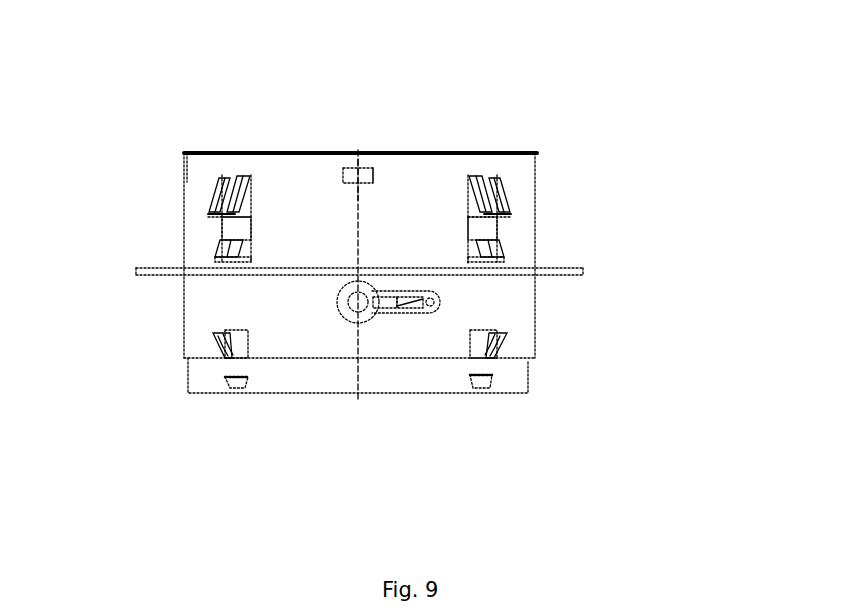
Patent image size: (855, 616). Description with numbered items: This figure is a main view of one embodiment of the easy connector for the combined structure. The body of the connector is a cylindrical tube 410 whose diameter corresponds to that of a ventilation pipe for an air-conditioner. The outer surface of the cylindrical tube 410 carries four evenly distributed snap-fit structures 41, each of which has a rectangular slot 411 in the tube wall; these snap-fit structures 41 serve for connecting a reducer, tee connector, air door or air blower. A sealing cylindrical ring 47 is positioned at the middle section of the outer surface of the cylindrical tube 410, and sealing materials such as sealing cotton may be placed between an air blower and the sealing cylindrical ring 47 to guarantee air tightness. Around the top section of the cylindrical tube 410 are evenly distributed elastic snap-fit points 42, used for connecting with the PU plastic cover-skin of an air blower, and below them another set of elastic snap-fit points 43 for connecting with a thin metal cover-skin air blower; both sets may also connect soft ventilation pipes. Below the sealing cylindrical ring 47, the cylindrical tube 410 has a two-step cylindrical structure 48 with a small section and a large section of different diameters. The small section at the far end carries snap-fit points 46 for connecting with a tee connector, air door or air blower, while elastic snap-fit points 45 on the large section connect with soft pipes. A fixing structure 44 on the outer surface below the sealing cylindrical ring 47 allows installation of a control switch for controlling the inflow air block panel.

The snap-fit structure 41 is at (465, 105).
The cylindrical tube 410 is at (352, 91).
The rectangular slot 411 is at (545, 116).
The elastic snap-fit points 42 is at (600, 159).
The elastic snap-fit points 43 is at (600, 209).
The fixing structure 44 is at (535, 269).
The elastic snap-fit points 45 is at (601, 312).
The snap-fit point 46 is at (601, 353).
The sealing cylindrical ring 47 is at (314, 153).
The two-step cylindrical structure 48 is at (300, 385).